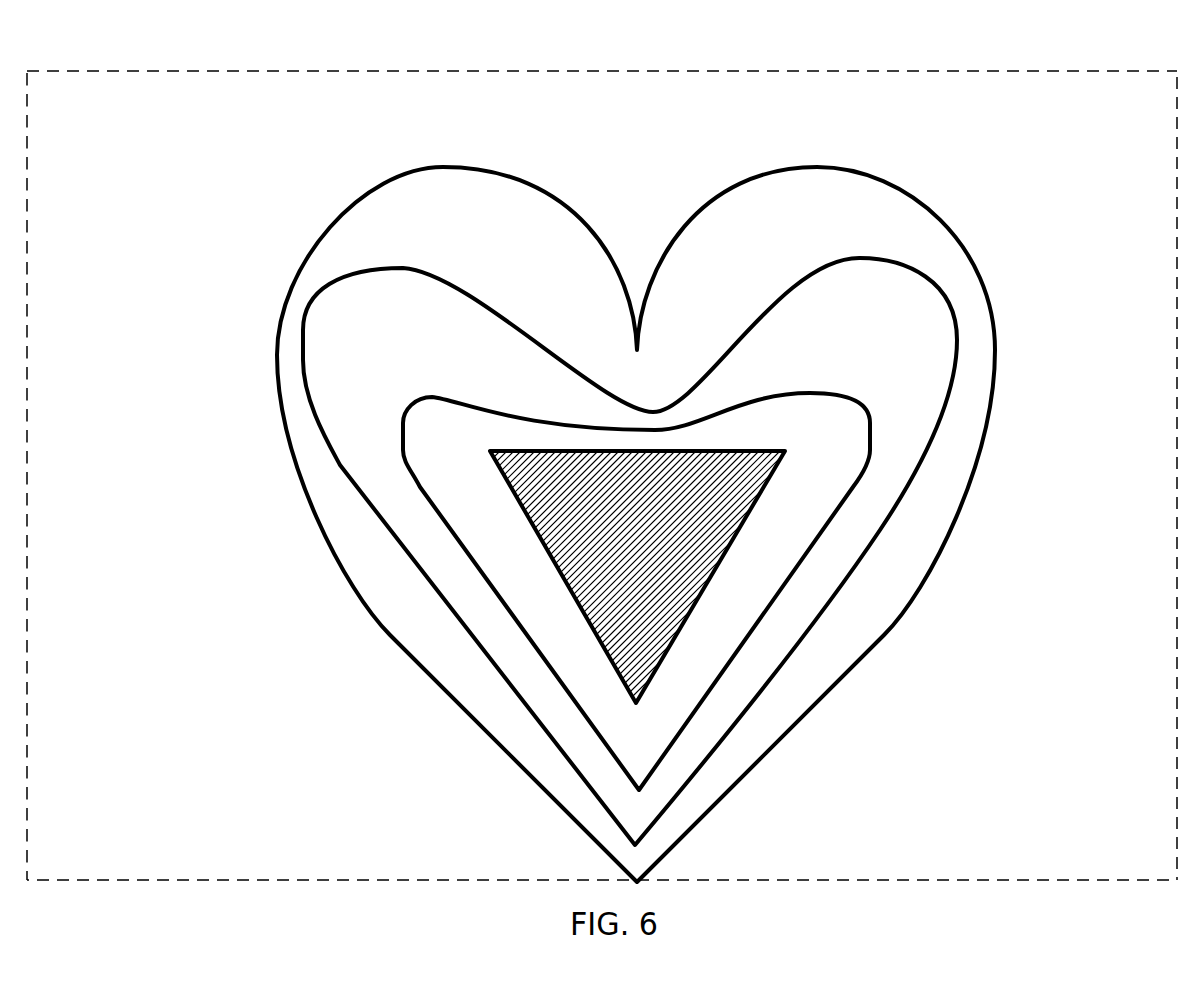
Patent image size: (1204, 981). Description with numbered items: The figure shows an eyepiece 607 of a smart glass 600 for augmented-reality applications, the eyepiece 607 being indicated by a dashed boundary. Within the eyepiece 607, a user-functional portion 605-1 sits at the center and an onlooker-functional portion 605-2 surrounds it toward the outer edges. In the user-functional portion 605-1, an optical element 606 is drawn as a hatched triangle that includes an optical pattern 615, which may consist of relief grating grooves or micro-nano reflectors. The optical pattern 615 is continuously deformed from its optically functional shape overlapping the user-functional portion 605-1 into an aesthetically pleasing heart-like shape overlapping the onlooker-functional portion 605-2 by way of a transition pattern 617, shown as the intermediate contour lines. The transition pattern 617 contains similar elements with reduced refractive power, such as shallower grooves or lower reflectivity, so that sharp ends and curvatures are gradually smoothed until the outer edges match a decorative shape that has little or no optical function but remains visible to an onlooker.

The smart glass 600 is at (345, 50).
The eyepiece 607 is at (893, 71).
The onlooker-functional portion 605-2 is at (287, 144).
The transition pattern 617 is at (401, 459).
The user-functional portion 605-1 is at (790, 448).
The optical element 606 is at (563, 577).
The optical pattern 615 is at (640, 613).